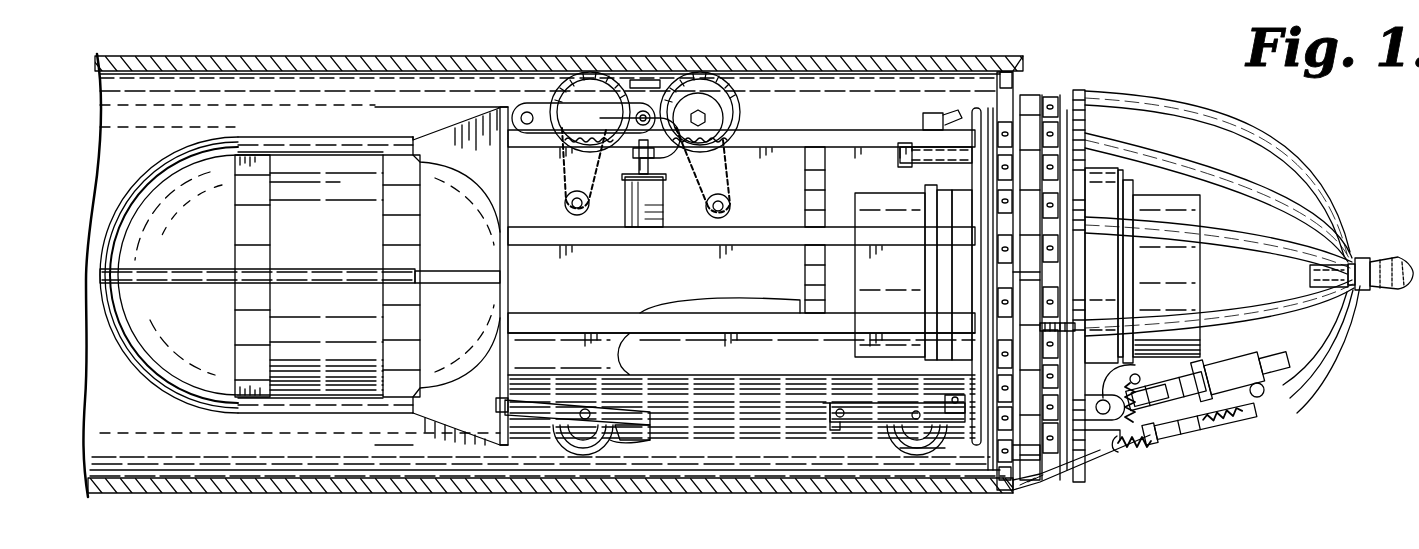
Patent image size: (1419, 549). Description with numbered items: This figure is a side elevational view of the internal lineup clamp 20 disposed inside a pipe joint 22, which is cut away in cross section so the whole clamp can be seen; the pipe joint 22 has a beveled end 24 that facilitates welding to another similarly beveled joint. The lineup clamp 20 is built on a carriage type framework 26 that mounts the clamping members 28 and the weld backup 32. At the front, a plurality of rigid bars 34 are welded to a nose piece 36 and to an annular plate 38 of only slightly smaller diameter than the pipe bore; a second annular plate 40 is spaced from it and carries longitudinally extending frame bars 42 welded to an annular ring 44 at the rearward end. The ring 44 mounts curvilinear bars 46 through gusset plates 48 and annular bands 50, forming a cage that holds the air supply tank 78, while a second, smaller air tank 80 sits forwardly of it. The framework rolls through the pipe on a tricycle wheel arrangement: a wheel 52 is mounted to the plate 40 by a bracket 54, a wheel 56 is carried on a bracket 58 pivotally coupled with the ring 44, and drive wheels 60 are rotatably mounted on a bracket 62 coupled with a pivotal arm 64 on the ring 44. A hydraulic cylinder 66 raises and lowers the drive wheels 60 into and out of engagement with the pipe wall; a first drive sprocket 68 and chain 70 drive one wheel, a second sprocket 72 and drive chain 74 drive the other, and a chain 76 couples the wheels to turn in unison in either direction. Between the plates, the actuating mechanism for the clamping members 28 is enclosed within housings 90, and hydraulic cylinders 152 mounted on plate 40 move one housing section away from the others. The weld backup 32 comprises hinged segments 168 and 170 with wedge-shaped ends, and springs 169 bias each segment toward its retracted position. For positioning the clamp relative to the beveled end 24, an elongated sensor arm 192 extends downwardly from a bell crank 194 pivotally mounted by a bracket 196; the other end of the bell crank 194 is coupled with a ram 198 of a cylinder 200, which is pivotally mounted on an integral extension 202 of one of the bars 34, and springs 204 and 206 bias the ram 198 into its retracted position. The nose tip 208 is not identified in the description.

The internal lineup clamp 20 is at (1285, 121).
The pipe joint 22 is at (917, 490).
The beveled end 24 is at (1011, 72).
The carriage type framework 26 is at (1153, 96).
The clamping members 28 is at (1050, 82).
The weld backup 32 is at (1045, 471).
The rigid bars 34 is at (1320, 185).
The nose piece 36 is at (1358, 257).
The annular plate 38 is at (1083, 92).
The second annular plate 40 is at (975, 128).
The frame bars 42 is at (715, 246).
The annular ring 44 is at (508, 163).
The curvilinear bars 46 is at (197, 153).
The gusset plates 48 is at (447, 127).
The annular bands 50 is at (262, 226).
The wheels 52 is at (893, 437).
The bracket 54 is at (850, 435).
The second pair of wheels 56 is at (635, 440).
The bracket 58 is at (540, 430).
The drive wheels 60 is at (602, 74).
The bracket 62 is at (712, 119).
The pivotal arm 64 is at (600, 118).
The hydraulic cylinder 66 is at (640, 198).
The first drive sprocket 68 is at (575, 192).
The chain 70 is at (563, 188).
The second sprocket 72 is at (740, 205).
The drive chain 74 is at (735, 177).
The chain 76 is at (640, 78).
The air supply tank 78 is at (355, 306).
The second air tank 80 is at (775, 347).
The housings 90 is at (866, 265).
The hydraulic cylinders 152 is at (926, 158).
The segment 168 is at (1040, 272).
The springs 169 is at (1065, 327).
The segment 170 is at (1026, 452).
The sensor arm 192 is at (1082, 462).
The bell crank 194 is at (1128, 452).
The bracket 196 is at (1131, 374).
The ram 198 is at (1160, 444).
The cylinder 200 is at (1255, 416).
The integral extension 202 is at (1250, 381).
The spring 204 is at (1138, 383).
The spring 206 is at (1212, 425).
The nose tip 208 is at (1398, 290).